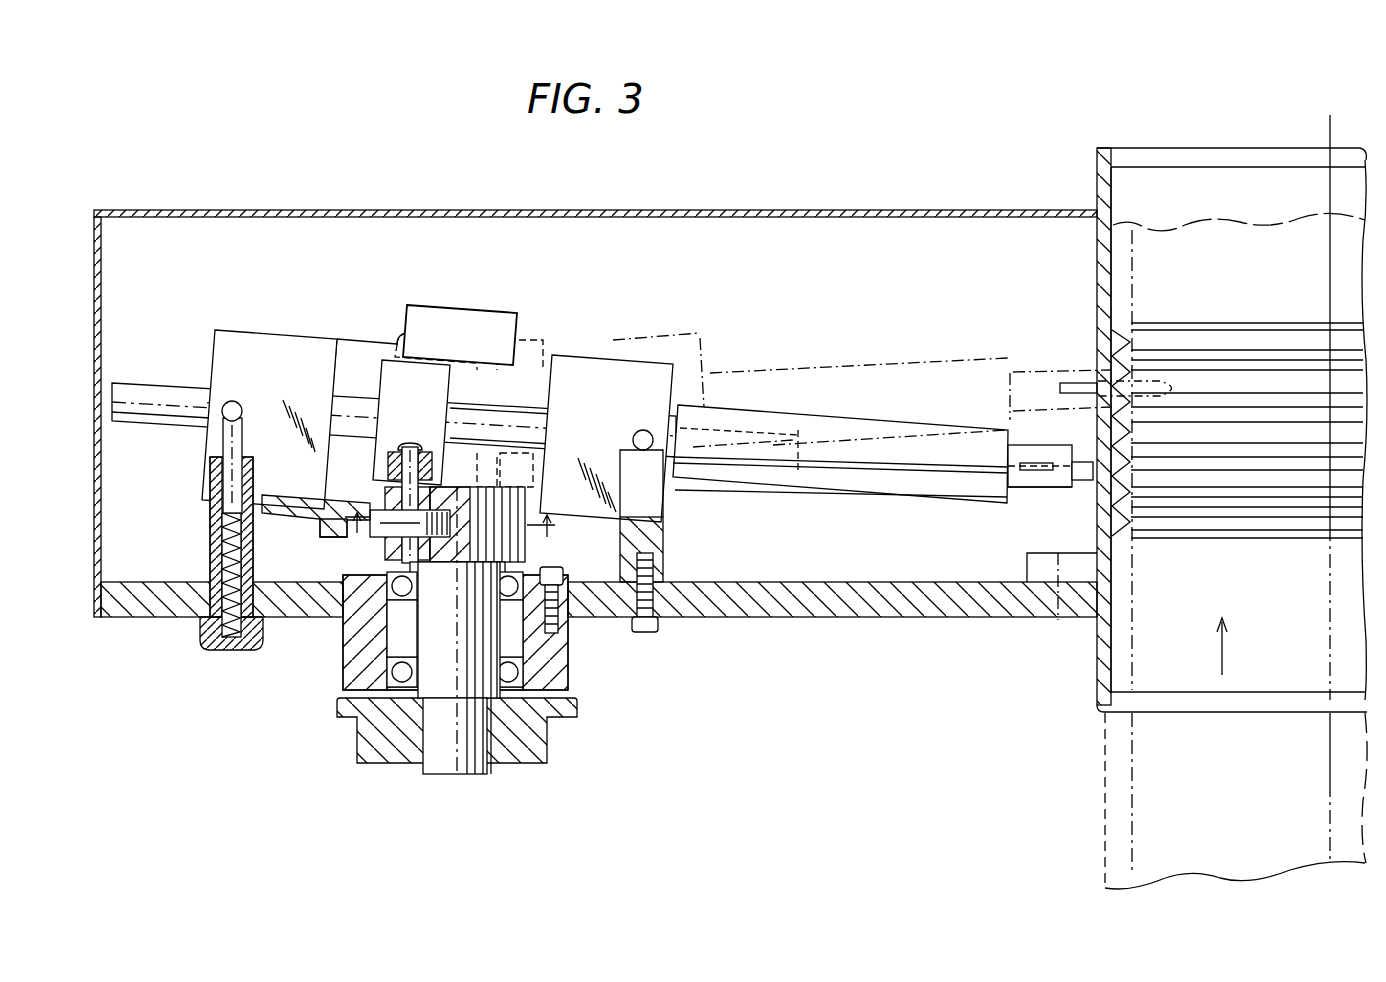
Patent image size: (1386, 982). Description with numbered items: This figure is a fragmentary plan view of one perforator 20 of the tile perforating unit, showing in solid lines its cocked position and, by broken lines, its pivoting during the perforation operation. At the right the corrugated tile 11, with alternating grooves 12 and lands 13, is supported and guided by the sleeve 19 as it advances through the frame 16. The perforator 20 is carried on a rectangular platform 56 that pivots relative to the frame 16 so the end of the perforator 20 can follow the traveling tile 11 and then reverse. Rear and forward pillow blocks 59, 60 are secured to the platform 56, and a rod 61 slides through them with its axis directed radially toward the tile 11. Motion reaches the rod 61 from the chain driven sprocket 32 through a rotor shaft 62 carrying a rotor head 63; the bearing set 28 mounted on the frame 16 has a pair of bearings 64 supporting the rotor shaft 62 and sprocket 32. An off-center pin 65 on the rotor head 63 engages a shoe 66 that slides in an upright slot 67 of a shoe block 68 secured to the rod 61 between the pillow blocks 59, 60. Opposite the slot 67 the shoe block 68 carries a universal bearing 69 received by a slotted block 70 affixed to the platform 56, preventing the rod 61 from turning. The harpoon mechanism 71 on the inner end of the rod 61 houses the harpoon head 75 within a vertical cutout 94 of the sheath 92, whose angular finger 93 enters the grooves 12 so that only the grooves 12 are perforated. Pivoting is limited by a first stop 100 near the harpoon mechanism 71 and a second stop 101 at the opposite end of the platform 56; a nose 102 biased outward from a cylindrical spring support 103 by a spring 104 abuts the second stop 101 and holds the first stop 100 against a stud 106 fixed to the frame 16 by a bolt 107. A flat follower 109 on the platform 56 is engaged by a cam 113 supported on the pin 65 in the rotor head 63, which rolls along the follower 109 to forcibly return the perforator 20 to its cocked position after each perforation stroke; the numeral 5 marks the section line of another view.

The section line 5- 5 is at (450, 536).
The corrugated tile 11 is at (1236, 593).
The grooves 12 is at (1097, 345).
The lands 13 is at (1097, 500).
The frame 16 is at (800, 618).
The sleeve 19 is at (1097, 668).
The perforator 20 is at (811, 314).
The bearing set 28 is at (570, 665).
The chain driven sprocket 32 is at (552, 745).
The rectangular platform 56 is at (362, 340).
The rear pillow block 59 is at (289, 388).
The forward pillow block 60 is at (622, 401).
The rod 61 is at (173, 390).
The rotor shaft 62 is at (449, 641).
The rotor head 63 is at (525, 548).
The bearings 64 is at (395, 651).
The off-center pin 65 is at (400, 483).
The shoe 66 is at (416, 479).
The upright slot 67 is at (403, 448).
The shoe block 68 is at (430, 391).
The universal bearing 69 is at (395, 345).
The slotted block 70 is at (497, 308).
The harpoon mechanism 71 is at (905, 496).
The harpoon head 75 is at (1051, 473).
The sheath 92 is at (1033, 439).
The angular finger 93 is at (1074, 488).
The vertical cutout 94 is at (1074, 466).
The first stop 100 is at (633, 440).
The second stop 101 is at (221, 425).
The nose 102 is at (223, 447).
The cylindrical spring support 103 is at (212, 566).
The spring 104 is at (223, 531).
The stud 106 is at (663, 557).
The bolt 107 is at (655, 628).
The follower 109 is at (293, 521).
The cam 113 is at (323, 500).